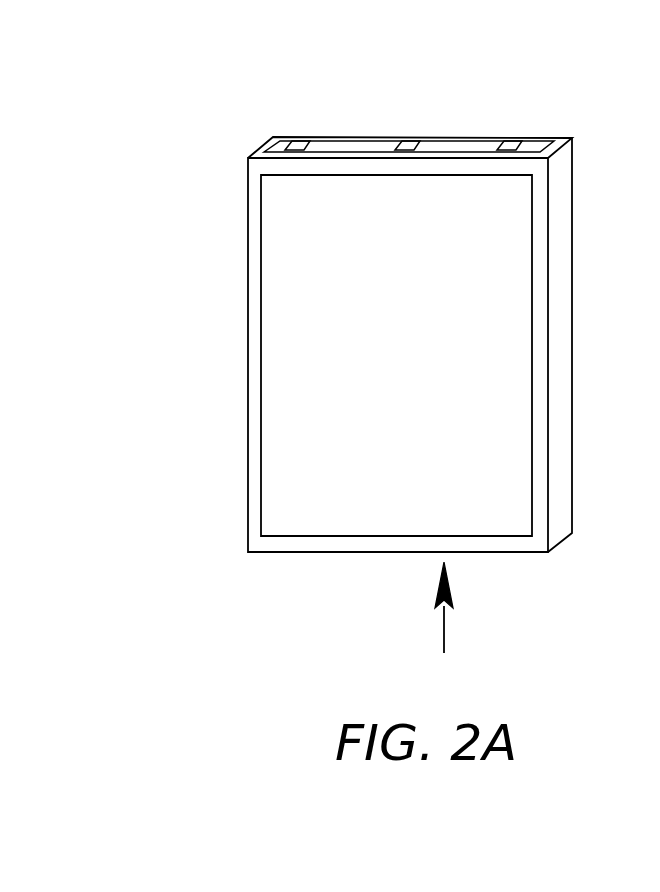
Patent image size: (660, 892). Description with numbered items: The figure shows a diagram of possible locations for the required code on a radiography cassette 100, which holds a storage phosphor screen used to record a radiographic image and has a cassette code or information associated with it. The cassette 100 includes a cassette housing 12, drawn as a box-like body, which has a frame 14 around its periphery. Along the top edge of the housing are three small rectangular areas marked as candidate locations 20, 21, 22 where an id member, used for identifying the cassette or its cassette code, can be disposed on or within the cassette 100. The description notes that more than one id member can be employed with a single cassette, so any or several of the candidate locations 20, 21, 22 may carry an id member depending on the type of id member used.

The cassette 100 is at (352, 353).
The cassette housing 12 is at (298, 273).
The frame 14 is at (248, 417).
The candidate location of id member 20 is at (308, 140).
The candidate location of id member 21 is at (413, 140).
The candidate location of id member 22 is at (513, 140).